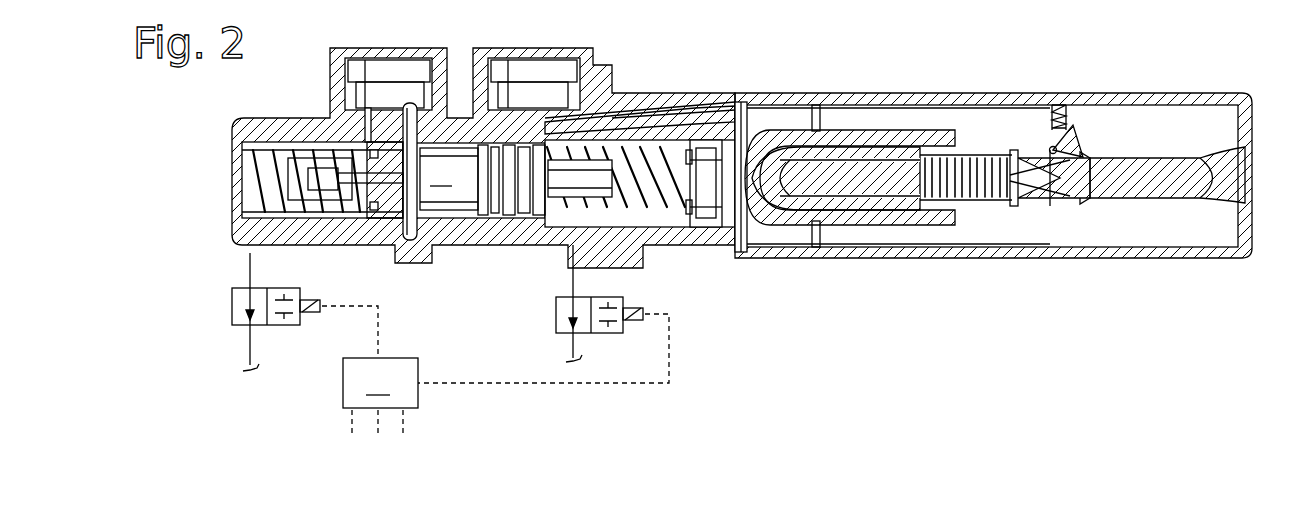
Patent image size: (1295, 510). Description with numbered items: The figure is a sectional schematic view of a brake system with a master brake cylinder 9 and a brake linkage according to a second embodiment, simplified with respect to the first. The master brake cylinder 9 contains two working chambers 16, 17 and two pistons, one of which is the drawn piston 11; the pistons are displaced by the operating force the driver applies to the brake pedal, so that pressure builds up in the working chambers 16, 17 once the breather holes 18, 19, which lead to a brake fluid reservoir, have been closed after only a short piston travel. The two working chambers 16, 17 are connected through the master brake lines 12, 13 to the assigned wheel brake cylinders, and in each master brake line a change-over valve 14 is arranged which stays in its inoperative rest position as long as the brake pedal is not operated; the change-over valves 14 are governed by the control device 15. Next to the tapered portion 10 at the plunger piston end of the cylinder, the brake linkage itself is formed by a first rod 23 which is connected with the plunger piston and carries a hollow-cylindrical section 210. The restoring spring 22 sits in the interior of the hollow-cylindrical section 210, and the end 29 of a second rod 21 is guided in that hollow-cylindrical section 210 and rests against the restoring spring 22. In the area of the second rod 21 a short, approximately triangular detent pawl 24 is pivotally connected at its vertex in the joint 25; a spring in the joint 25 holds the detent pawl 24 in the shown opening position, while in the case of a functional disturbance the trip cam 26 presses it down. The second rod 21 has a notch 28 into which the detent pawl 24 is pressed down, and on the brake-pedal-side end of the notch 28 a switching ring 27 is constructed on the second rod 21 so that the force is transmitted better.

The master brake cylinder 9 is at (581, 33).
The tapered tube 10 is at (649, 105).
The piston 11 is at (482, 180).
The master brake line 12 is at (250, 253).
The master brake line 13 is at (573, 282).
The change-over valve 14 is at (230, 308).
The control device 15 is at (380, 396).
The working chamber 16 is at (637, 202).
The working chamber 17 is at (267, 157).
The breather hole 18 is at (705, 177).
The breather hole 19 is at (367, 140).
The second rod 21 is at (1163, 157).
The restoring spring 22 is at (962, 200).
The first rod 23 is at (872, 196).
The detent pawl 24 is at (1076, 141).
The joint 25 is at (1052, 146).
The trip cam 26 is at (1067, 110).
The switching ring 27 is at (1088, 194).
The notch 28 is at (1075, 194).
The end of the second rod 29 is at (1016, 190).
The hollow-cylindrical section 210 is at (995, 157).